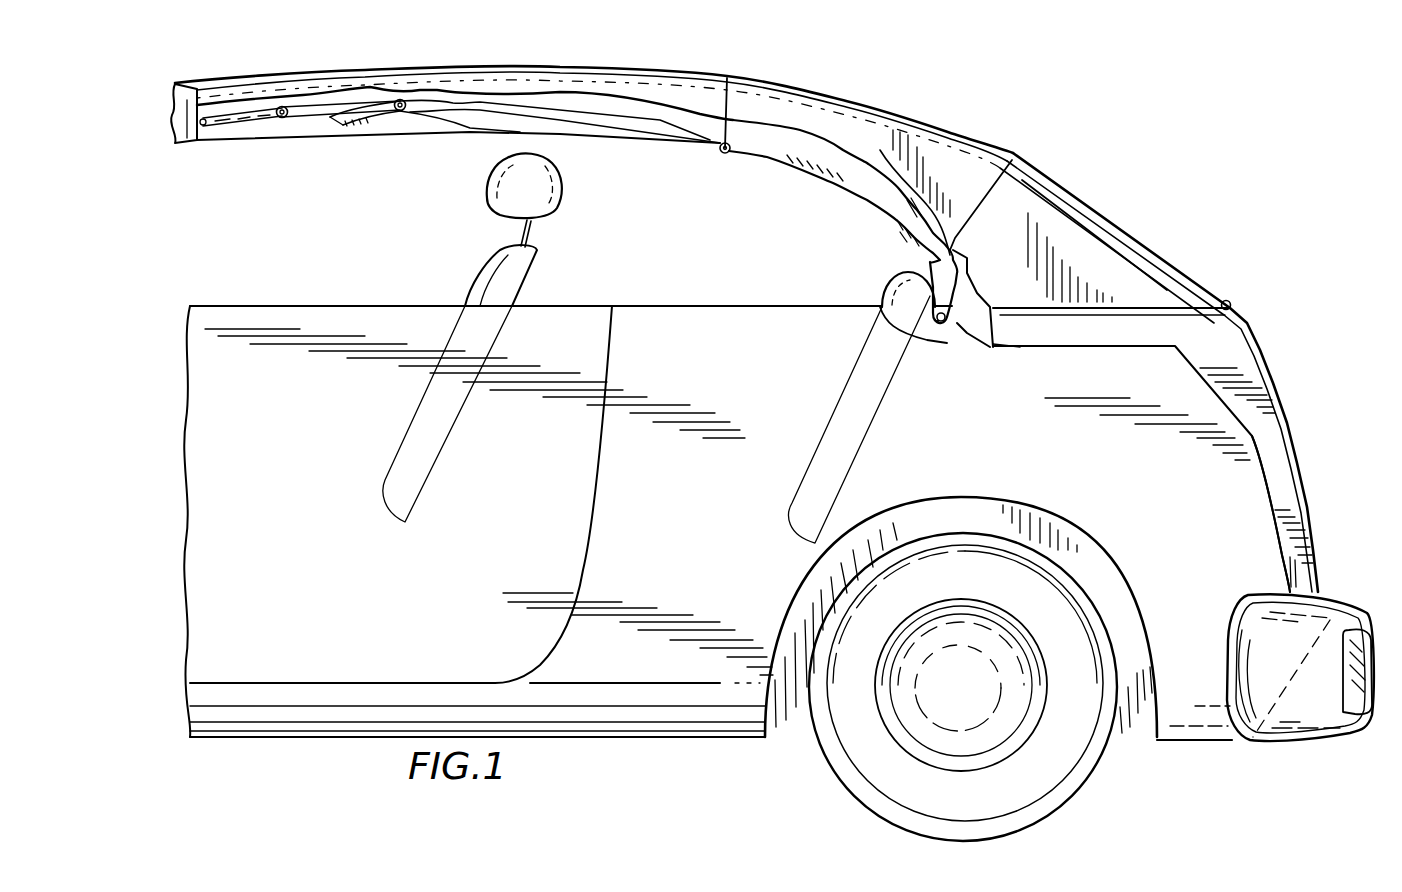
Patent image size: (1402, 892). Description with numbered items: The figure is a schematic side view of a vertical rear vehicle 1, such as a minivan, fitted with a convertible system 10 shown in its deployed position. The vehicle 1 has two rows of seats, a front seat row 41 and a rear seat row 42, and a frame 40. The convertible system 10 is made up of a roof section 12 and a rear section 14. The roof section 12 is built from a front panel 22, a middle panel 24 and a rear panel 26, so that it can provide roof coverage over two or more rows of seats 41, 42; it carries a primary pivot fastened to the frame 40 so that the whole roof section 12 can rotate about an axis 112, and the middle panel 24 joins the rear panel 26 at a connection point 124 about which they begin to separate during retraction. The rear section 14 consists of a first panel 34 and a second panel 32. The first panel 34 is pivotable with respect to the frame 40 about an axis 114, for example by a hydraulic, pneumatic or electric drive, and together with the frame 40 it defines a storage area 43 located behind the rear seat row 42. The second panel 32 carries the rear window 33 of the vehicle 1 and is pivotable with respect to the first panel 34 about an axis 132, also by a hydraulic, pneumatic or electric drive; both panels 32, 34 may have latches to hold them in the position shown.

The vertical rear vehicle 1 is at (173, 462).
The convertible system 10 is at (240, 205).
The roof section 12 is at (683, 57).
The rear section 14 is at (1187, 255).
The front panel 22 is at (427, 78).
The middle panel 24 is at (508, 82).
The rear panel 26 is at (810, 112).
The second panel 32 is at (1043, 213).
The rear window 33 is at (1101, 213).
The first panel 34 is at (1265, 437).
The frame 40 is at (656, 690).
The front seat row 41 is at (400, 476).
The rear seat row 42 is at (800, 494).
The storage area 43 is at (1076, 393).
The axis 112 is at (963, 346).
The axis 114 is at (1255, 740).
The connection point 124 is at (721, 151).
The axis 132 is at (1237, 300).